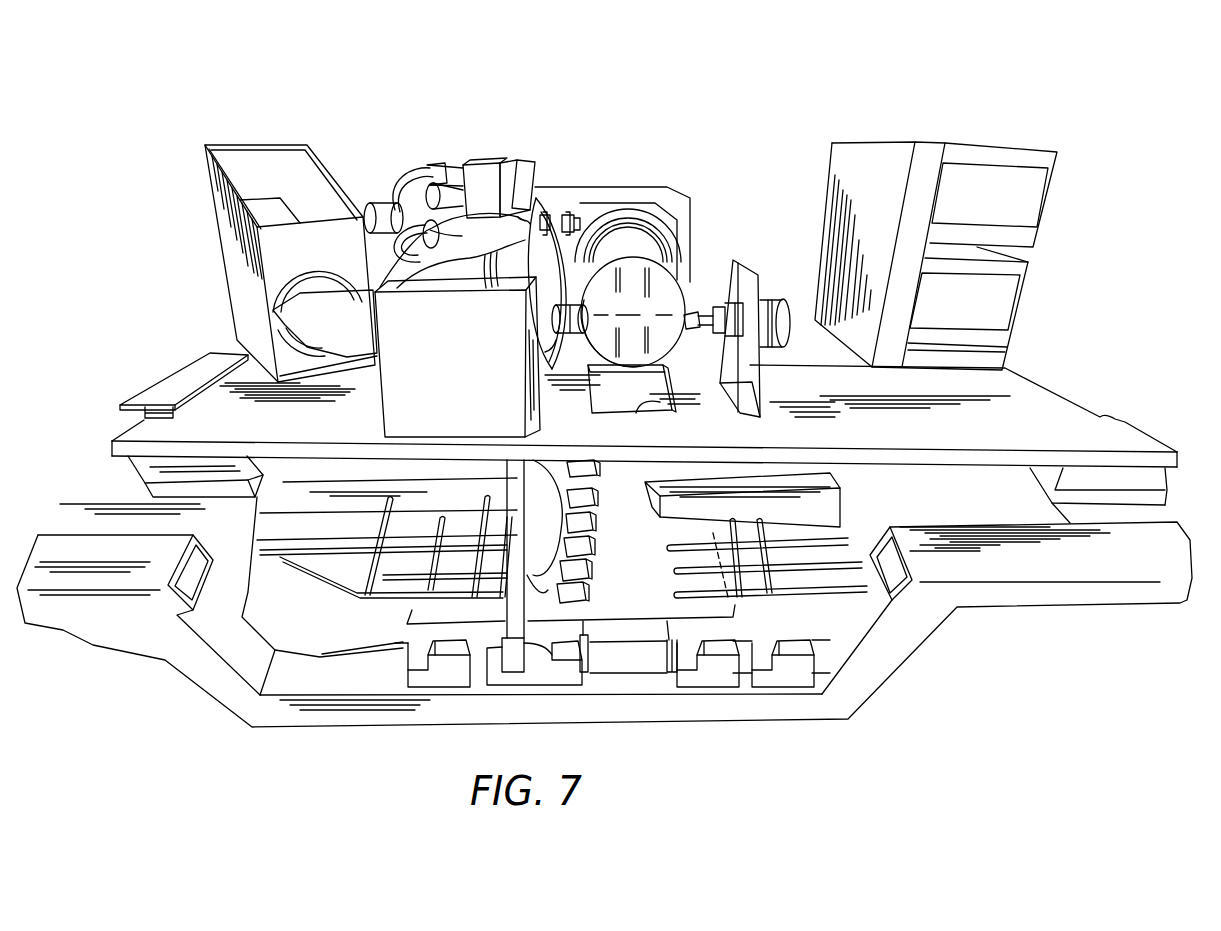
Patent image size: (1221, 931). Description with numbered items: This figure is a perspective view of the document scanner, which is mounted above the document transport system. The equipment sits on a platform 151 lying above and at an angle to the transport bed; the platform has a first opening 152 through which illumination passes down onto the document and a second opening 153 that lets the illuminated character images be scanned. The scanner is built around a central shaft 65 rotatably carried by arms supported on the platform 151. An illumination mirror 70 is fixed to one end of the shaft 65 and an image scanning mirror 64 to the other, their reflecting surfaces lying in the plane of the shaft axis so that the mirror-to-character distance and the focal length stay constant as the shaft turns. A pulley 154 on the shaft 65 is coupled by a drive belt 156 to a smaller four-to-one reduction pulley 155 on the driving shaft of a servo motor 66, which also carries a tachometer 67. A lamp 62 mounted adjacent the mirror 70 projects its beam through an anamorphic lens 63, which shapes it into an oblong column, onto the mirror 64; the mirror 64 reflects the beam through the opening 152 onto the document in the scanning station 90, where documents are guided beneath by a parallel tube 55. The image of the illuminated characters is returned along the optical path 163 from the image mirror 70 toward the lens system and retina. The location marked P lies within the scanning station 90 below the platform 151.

The platform 151 is at (1080, 418).
The first opening 152 is at (377, 399).
The lamp 62 is at (293, 143).
The anamorphic lens 63 is at (287, 307).
The image scanning mirror 64 is at (354, 329).
The servo motor 66 is at (473, 160).
The tachometer 67 is at (523, 160).
The drive belt 156 is at (540, 238).
The reduction pulley 155 is at (565, 232).
The pulley 154 is at (560, 350).
The illumination mirror 70 is at (594, 345).
The optical path 163 is at (675, 412).
The central shaft 65 is at (693, 333).
The second opening 153 is at (735, 261).
The parallel tube 55 is at (312, 580).
The floor plate P is at (628, 579).
The scanning station 90 is at (618, 603).